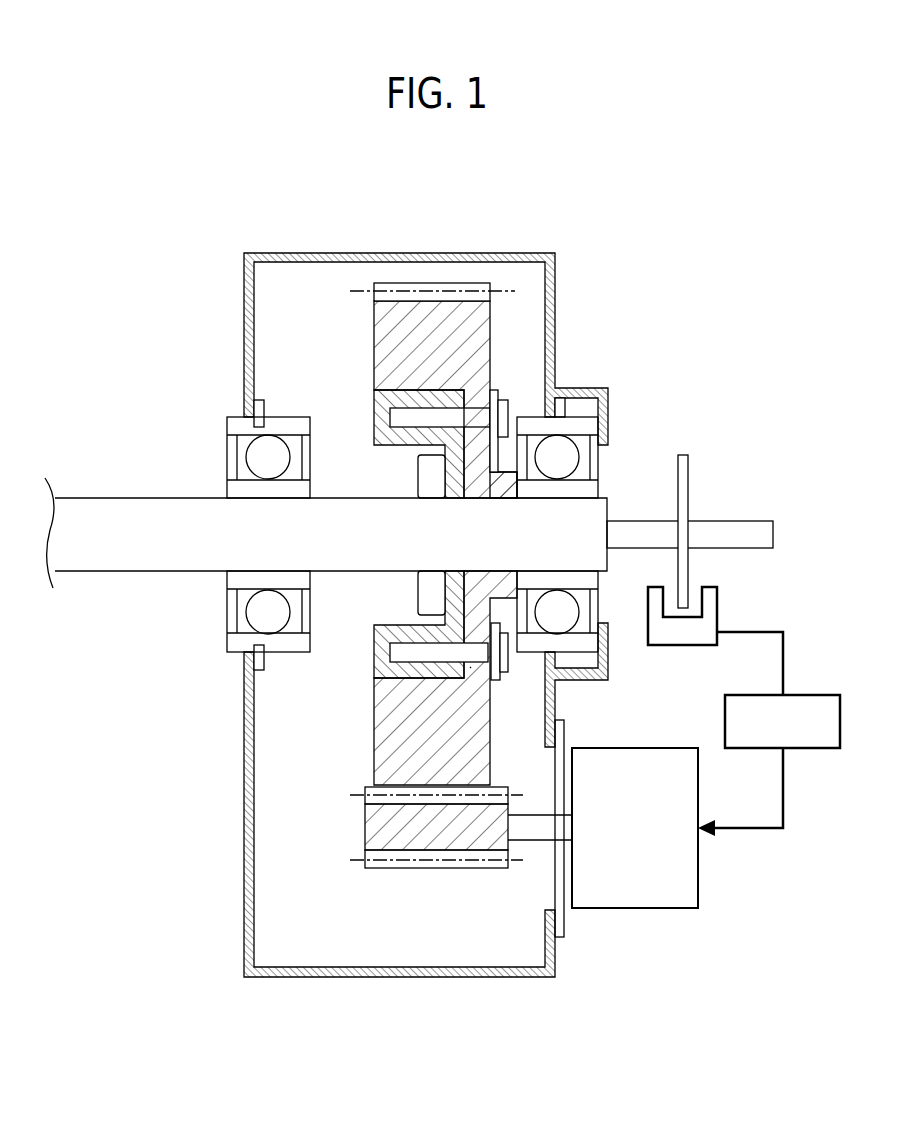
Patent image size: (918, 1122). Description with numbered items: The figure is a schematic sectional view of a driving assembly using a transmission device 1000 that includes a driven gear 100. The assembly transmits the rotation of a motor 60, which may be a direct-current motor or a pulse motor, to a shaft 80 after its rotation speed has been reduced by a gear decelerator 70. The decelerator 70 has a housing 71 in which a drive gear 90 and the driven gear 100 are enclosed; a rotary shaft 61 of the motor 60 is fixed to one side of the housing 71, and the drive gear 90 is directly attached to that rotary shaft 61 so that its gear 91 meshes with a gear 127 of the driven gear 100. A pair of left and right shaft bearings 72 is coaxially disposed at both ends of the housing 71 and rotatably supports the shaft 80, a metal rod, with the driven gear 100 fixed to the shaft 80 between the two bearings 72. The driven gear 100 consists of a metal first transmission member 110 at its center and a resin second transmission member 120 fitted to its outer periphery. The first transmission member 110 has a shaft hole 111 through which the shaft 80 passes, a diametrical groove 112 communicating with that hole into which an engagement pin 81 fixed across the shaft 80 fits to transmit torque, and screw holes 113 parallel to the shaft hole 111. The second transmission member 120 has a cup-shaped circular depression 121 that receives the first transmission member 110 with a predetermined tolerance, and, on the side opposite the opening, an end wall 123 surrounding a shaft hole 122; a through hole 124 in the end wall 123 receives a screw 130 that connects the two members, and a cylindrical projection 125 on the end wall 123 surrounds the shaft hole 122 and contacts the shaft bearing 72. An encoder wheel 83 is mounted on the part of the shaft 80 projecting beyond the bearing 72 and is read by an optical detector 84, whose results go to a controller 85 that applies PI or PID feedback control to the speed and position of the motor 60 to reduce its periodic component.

The motor 60 is at (633, 910).
The rotary shaft 61 is at (537, 842).
The gear decelerator 70 is at (442, 594).
The housing 71 is at (244, 800).
The shaft bearings 72 is at (238, 425).
The shaft 80 is at (137, 510).
The engagement pin 81 is at (425, 590).
The encoder wheel 83 is at (688, 473).
The optical detector 84 is at (717, 602).
The controller 85 is at (812, 750).
The drive gear 90 is at (372, 832).
The gear 91 is at (432, 870).
The driven gear 100 is at (469, 498).
The first transmission member 110 is at (383, 650).
The shaft hole 111 is at (403, 430).
The groove 112 is at (385, 457).
The screw holes 113 is at (392, 420).
The second transmission member 120 is at (390, 745).
The circular depression 121 is at (373, 675).
The shaft hole 122 is at (500, 570).
The end wall 123 is at (470, 667).
The through hole 124 is at (494, 650).
The cylindrical projection 125 is at (508, 490).
The gear 127 is at (445, 283).
The screw 130 is at (510, 407).
The transmission device 1000 is at (422, 864).